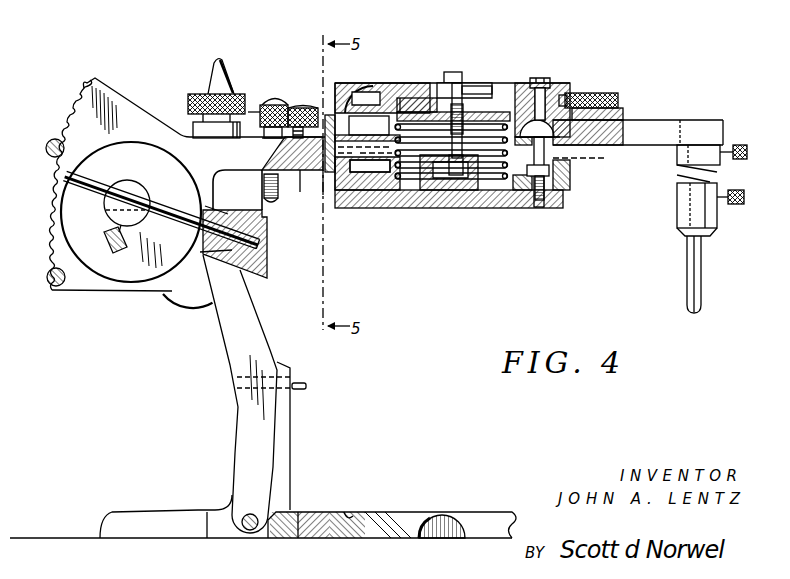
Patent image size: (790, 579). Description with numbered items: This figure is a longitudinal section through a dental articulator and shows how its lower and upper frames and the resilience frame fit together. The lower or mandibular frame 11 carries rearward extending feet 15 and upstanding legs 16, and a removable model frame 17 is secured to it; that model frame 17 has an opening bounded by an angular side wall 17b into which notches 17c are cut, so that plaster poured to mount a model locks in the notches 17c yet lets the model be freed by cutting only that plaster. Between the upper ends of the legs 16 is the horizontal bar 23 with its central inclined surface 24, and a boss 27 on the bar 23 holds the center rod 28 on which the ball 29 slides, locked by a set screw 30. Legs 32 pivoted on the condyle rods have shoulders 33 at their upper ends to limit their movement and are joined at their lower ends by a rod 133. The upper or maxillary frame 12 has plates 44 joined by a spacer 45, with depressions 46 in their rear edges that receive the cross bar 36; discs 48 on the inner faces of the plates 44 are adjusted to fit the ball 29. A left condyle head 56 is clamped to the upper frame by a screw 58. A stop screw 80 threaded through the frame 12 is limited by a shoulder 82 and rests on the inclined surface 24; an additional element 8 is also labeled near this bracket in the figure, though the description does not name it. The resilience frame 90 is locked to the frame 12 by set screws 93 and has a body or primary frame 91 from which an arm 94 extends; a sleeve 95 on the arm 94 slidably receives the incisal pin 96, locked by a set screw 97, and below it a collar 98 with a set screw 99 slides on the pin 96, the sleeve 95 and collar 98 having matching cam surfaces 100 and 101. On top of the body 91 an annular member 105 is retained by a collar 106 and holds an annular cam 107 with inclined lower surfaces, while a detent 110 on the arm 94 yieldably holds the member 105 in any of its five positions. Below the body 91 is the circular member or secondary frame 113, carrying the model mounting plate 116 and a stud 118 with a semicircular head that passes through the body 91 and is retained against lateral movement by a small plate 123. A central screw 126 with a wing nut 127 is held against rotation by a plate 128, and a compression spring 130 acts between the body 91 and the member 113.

The piston rod 8 is at (292, 173).
The lower or mandibular frame 11 is at (228, 472).
The upper or maxillary frame 12 is at (296, 196).
The rearward extending feet 15 is at (114, 523).
The upstanding legs 16 is at (292, 453).
The removable model frame 17 is at (403, 527).
The angular side wall 17b is at (348, 517).
The notches 17c is at (331, 538).
The horizontal bar 23 is at (268, 260).
The inclined surface 24 is at (264, 188).
The boss 27 is at (222, 252).
The center rod 28 is at (97, 181).
The ball 29 is at (135, 192).
The set screw 30 is at (104, 238).
The legs 32 is at (250, 428).
The shoulders 33 is at (217, 207).
The cross bar 36 is at (46, 149).
The plates 44 is at (82, 293).
The spacer 45 is at (48, 282).
The depressions 46 is at (52, 196).
The discs 48 is at (178, 180).
The left condyle head 56 is at (178, 305).
The screw 58 is at (207, 79).
The stop screw 80 is at (272, 103).
The shoulder 82 is at (268, 140).
The upper model frame or resilience frame 90 is at (536, 72).
The body or primary frame 91 is at (369, 126).
The set screws 93 is at (305, 106).
The arm 94 is at (665, 130).
The sleeve 95 is at (677, 155).
The incisal pin 96 is at (702, 263).
The set screw 97 is at (745, 151).
The collar 98 is at (680, 207).
The set screw 99 is at (745, 198).
The cam surface 100 is at (680, 168).
The cam surface 101 is at (683, 178).
The annular member 105 is at (353, 100).
The collar 106 is at (519, 98).
The annular cam 107 is at (386, 95).
The detent 110 is at (592, 98).
The circular member or secondary frame 113 is at (358, 190).
The model mounting plate 116 is at (510, 208).
The stud 118 is at (540, 207).
The small plate 123 is at (562, 172).
The screw 126 is at (444, 192).
The wing nut 127 is at (461, 78).
The plate 128 is at (437, 100).
The compression spring 130 is at (408, 176).
The rod 133 is at (250, 531).